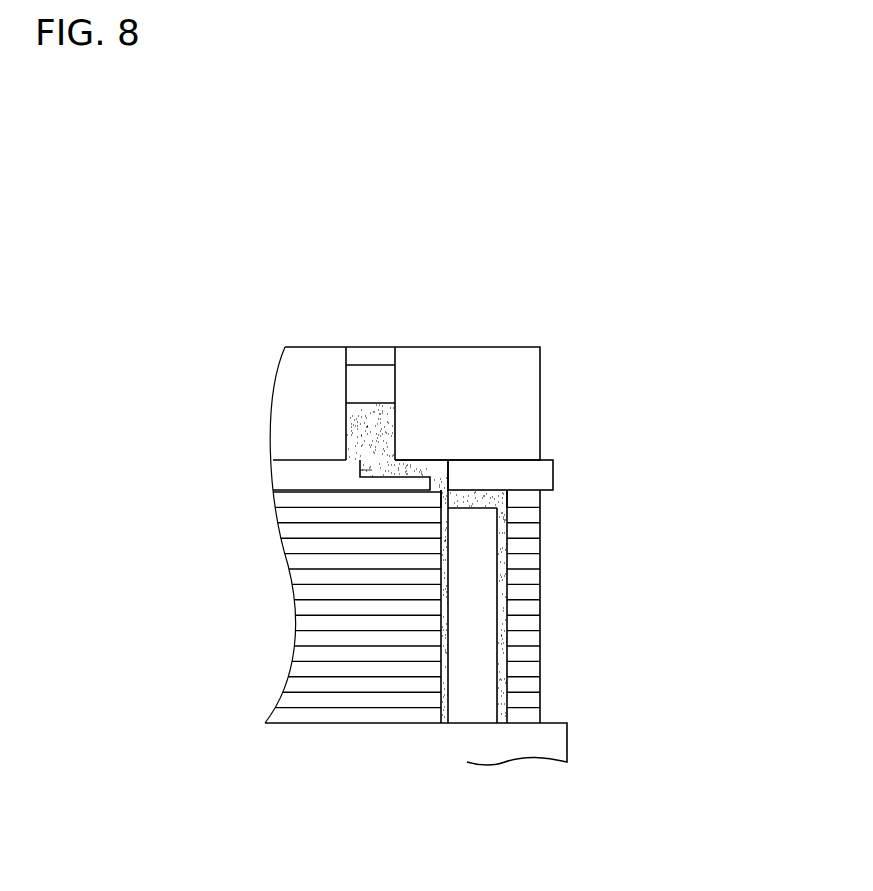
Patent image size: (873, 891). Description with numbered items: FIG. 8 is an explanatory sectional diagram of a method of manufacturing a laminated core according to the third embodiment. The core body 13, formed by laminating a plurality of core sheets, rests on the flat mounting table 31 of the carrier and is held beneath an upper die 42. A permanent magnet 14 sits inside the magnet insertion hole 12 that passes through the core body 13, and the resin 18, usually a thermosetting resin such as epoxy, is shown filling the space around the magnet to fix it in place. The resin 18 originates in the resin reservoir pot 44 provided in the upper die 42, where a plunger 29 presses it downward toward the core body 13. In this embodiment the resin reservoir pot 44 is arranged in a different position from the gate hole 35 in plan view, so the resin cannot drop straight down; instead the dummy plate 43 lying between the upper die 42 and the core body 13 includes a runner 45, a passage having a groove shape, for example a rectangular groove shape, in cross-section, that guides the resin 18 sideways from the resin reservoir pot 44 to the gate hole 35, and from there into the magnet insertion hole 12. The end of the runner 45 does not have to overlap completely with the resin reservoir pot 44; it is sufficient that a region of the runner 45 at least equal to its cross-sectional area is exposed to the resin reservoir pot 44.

The magnet insertion hole 12 is at (505, 668).
The core body 13 is at (541, 607).
The permanent magnet 14 is at (468, 653).
The resin 18 is at (370, 450).
The plunger 29 is at (370, 387).
The mounting table 31 is at (527, 744).
The gate hole 35 is at (441, 482).
The upper die 42 is at (518, 393).
The dummy plate 43 is at (538, 478).
The resin reservoir pot 44 is at (346, 435).
The runner 45 is at (413, 462).